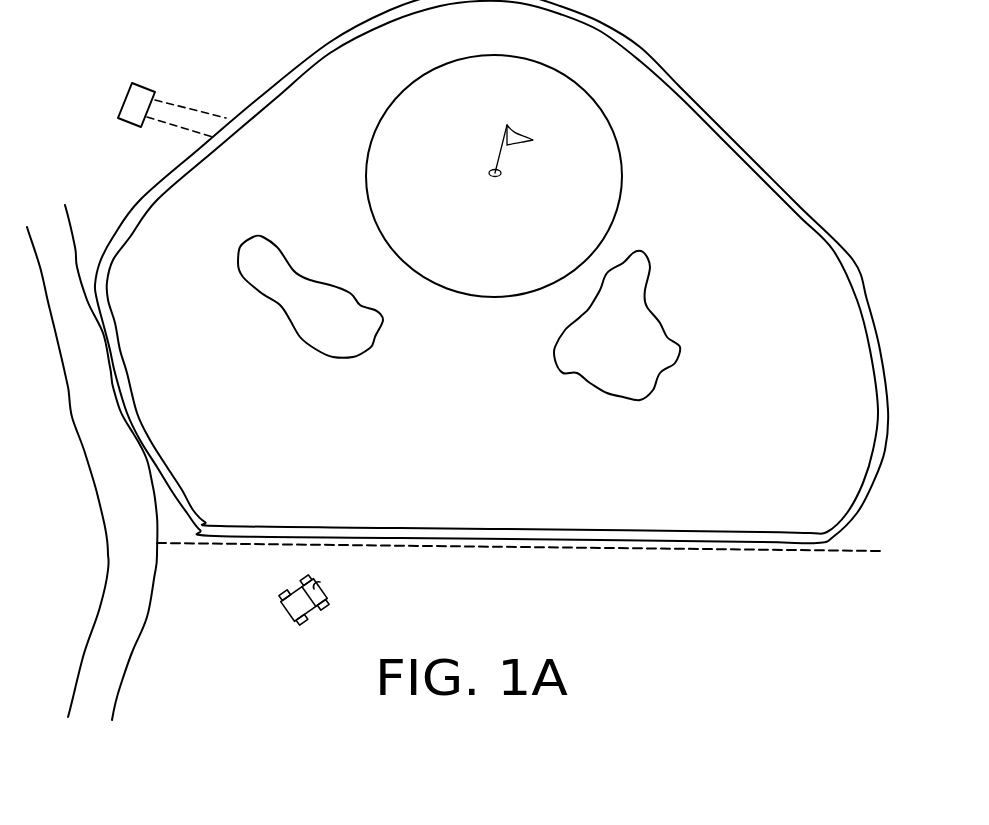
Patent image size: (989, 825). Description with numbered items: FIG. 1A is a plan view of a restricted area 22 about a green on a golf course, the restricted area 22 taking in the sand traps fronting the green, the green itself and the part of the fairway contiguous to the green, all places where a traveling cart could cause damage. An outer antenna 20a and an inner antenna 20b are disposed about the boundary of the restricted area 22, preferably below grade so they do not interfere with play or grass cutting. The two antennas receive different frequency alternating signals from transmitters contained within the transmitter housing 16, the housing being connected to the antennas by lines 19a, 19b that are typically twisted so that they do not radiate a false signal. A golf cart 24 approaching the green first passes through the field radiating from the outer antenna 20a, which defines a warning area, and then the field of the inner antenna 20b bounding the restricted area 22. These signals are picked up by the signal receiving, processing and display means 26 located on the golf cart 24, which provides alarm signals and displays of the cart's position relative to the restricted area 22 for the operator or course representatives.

The transmitter housing 16 is at (123, 97).
The line 19a is at (187, 104).
The line 19b is at (181, 128).
The outer antenna 20a is at (680, 84).
The inner antenna 20b is at (712, 132).
The restricted area 22 is at (608, 76).
The golf cart 24 is at (312, 613).
The signal receiving, processing and display means 26 is at (324, 584).